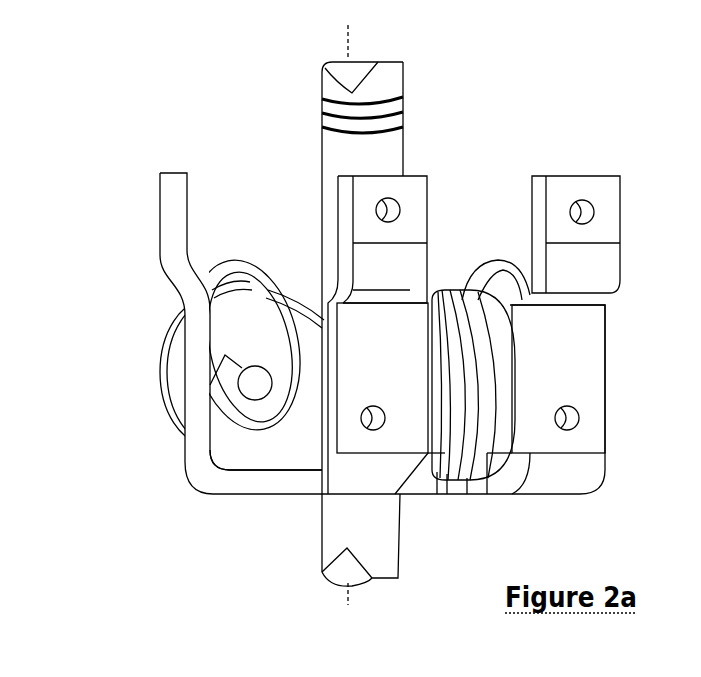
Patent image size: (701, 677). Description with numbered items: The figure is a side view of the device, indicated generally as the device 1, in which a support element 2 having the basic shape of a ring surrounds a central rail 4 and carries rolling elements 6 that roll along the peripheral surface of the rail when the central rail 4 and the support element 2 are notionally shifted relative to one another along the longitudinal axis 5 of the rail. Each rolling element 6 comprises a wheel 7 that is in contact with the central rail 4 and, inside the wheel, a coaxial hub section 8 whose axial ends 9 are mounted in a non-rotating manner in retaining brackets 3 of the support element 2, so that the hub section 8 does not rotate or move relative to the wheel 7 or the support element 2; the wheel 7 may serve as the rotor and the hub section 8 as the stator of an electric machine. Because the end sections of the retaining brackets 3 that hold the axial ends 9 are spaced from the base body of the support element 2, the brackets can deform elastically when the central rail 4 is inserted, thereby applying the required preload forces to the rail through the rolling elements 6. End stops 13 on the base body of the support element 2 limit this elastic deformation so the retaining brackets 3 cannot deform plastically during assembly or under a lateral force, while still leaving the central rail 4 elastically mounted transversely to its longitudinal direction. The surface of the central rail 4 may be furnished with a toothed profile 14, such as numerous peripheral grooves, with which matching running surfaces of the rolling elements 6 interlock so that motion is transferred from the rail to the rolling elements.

The fastening device 1 is at (540, 118).
The support element 2 is at (170, 230).
The retaining brackets 3 is at (223, 273).
The central rail 4 is at (378, 147).
The longitudinal axis 5 is at (365, 62).
The rolling elements 6 is at (462, 303).
The wheel 7 is at (308, 310).
The hub section 8 is at (253, 438).
The axial ends 9 is at (250, 383).
The end stops 13 is at (212, 380).
The toothed profile 14 is at (322, 108).